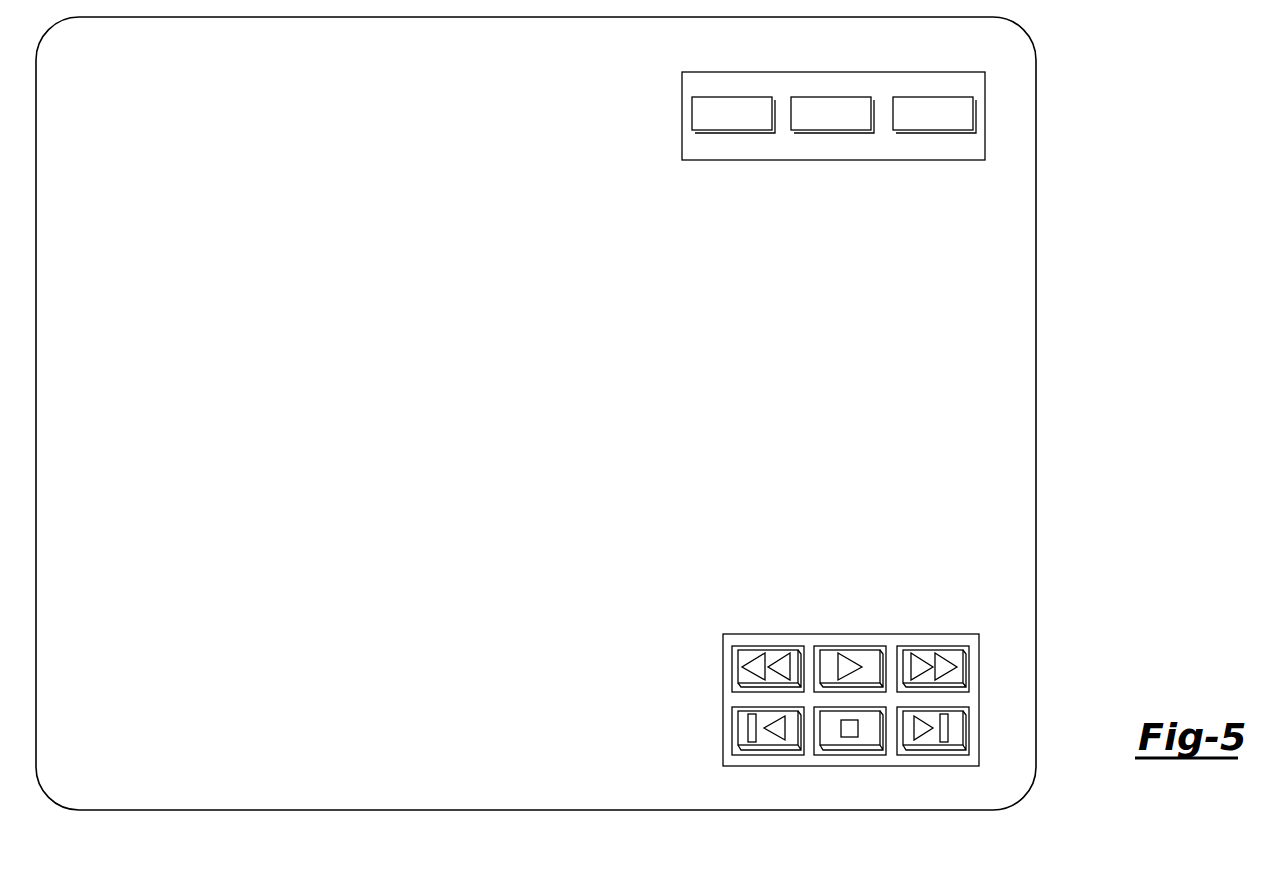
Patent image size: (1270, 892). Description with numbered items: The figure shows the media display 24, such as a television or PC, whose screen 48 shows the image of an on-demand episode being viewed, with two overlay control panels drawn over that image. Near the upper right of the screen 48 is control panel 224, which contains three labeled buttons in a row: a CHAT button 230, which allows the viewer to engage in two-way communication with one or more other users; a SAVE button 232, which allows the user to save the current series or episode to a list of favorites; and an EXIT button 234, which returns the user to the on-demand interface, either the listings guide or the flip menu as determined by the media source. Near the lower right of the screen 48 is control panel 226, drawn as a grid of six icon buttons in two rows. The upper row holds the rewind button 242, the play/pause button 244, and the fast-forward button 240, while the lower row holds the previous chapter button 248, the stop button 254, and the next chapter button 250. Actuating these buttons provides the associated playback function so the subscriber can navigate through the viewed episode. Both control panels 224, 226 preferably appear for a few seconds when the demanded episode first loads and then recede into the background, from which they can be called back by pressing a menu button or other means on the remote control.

The media display 24 is at (1040, 300).
The screen 48 is at (470, 377).
The control panel 224 is at (891, 153).
The control panel 226 is at (723, 720).
The CHAT button 230 is at (733, 133).
The SAVE button 232 is at (815, 133).
The EXIT button 234 is at (922, 133).
The fast-forward button 240 is at (918, 646).
The rewind button 242 is at (763, 646).
The play/pause button 244 is at (833, 646).
The previous chapter button 248 is at (767, 755).
The next chapter button 250 is at (927, 755).
The stop button 254 is at (848, 755).